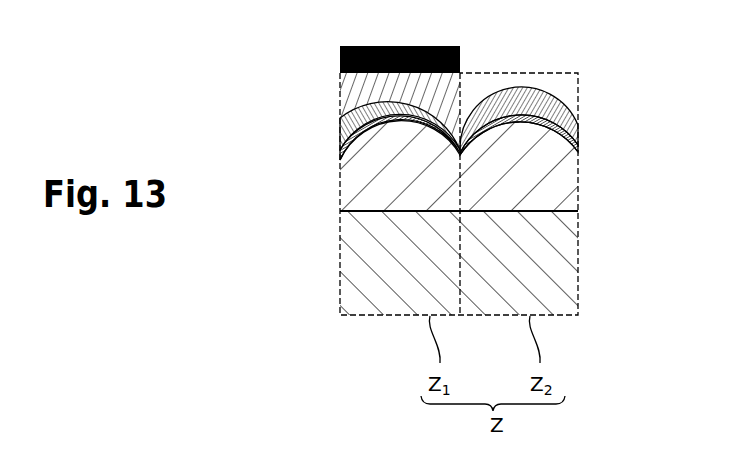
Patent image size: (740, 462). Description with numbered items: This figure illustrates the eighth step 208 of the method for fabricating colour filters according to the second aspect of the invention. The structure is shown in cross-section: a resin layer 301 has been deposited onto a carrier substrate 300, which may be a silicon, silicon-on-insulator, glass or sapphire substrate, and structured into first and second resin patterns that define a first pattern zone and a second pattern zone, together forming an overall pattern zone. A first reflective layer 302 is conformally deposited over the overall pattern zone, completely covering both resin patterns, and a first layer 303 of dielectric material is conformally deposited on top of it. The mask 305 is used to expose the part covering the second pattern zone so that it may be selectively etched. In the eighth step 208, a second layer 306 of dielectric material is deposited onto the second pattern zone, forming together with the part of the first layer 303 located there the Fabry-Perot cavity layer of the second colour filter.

The eighth step 208 is at (290, 75).
The carrier substrate 300 is at (358, 253).
The resin layer 301 is at (358, 176).
The first reflective layer 302 is at (557, 130).
The first layer of dielectric material 303 is at (533, 111).
The mask 305 is at (462, 60).
The second layer of dielectric material 306 is at (540, 90).